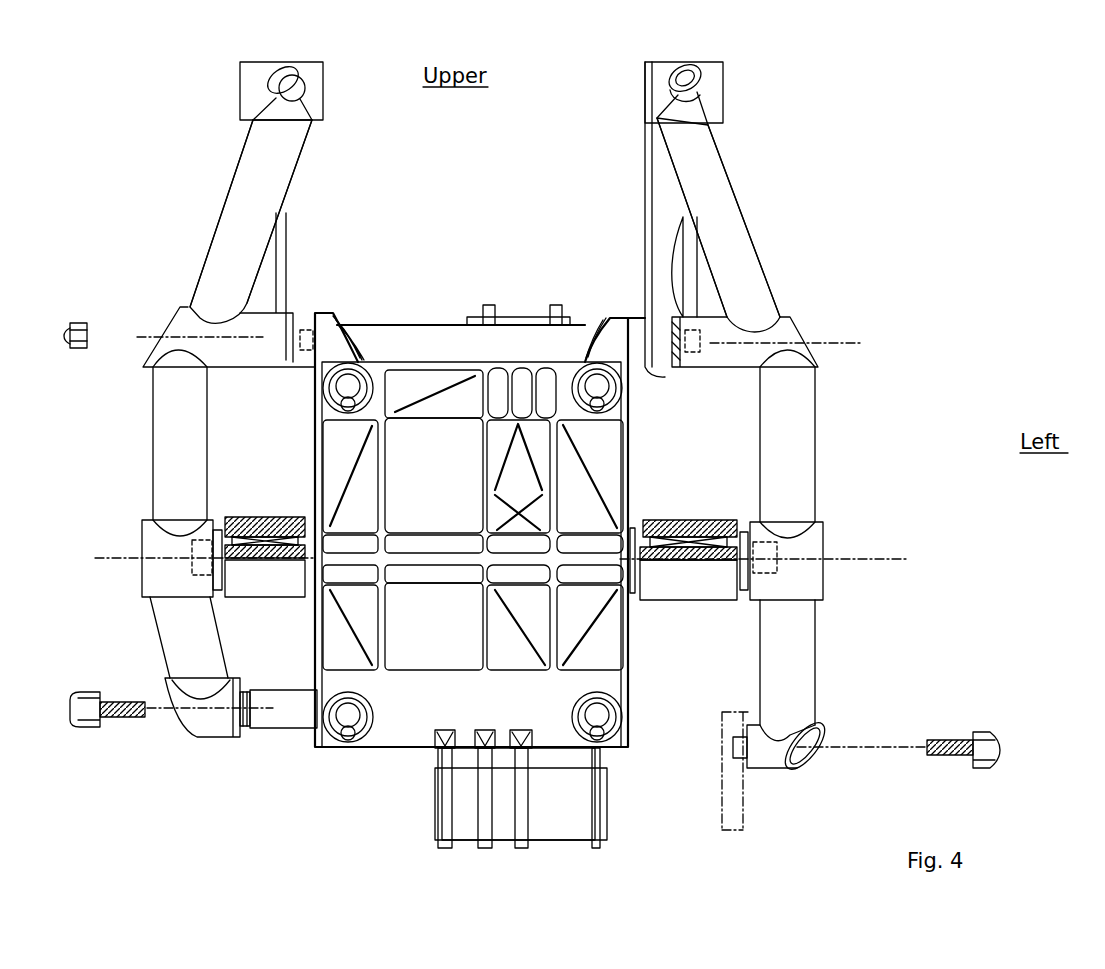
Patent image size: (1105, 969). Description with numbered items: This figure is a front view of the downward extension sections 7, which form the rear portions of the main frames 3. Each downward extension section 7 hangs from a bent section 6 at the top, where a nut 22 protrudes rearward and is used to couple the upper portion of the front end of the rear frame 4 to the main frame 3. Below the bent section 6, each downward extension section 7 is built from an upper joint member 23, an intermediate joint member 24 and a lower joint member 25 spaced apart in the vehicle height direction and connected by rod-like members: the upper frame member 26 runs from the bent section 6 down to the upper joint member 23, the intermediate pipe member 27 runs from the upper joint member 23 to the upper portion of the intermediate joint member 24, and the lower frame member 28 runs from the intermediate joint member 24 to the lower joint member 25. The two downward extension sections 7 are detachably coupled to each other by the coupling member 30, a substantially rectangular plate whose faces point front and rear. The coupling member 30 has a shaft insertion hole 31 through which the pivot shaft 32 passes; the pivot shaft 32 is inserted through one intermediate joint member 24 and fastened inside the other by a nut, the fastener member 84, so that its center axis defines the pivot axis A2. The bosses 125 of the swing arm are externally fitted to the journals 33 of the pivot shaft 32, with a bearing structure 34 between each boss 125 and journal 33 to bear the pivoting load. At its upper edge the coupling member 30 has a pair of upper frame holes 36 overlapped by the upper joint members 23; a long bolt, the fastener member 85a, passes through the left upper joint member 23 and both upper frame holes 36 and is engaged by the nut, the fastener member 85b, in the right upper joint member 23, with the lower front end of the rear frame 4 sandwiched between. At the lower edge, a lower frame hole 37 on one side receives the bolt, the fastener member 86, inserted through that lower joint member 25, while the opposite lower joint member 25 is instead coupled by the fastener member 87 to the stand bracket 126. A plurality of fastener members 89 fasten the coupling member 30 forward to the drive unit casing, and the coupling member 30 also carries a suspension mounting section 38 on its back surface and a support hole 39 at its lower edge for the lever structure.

The main frame 3 is at (231, 93).
The rear frame 4 is at (648, 110).
The bent section 6 is at (712, 72).
The downward extension section 7 is at (231, 154).
The nut 22 is at (668, 80).
The upper joint member 23 is at (290, 305).
The intermediate joint member 24 is at (145, 525).
The lower joint member 25 is at (185, 725).
The upper frame member 26 is at (240, 200).
The intermediate pipe member 27 is at (165, 413).
The lower frame member 28 is at (175, 645).
The coupling member 30 is at (405, 765).
The shaft insertion hole 31 is at (435, 530).
The pivot shaft 32 is at (648, 595).
The journal 33 is at (300, 545).
The bearing structure 34 is at (250, 517).
The upper frame hole 36 is at (330, 320).
The lower frame hole 37 is at (280, 730).
The suspension mounting section 38 is at (490, 305).
The support hole 39 is at (555, 827).
The fastener member (nut) 84 is at (195, 560).
The fastener member (bolt) 85a is at (700, 318).
The fastener member (nut) 85b is at (78, 323).
The fastener member (bolt) 86 is at (90, 727).
The fastener member (bolt) 87 is at (985, 732).
The fastener member (bolt) 89 is at (352, 375).
The boss 125 is at (275, 597).
The stand bracket 126 is at (737, 813).
The pivot axis A2 is at (875, 558).